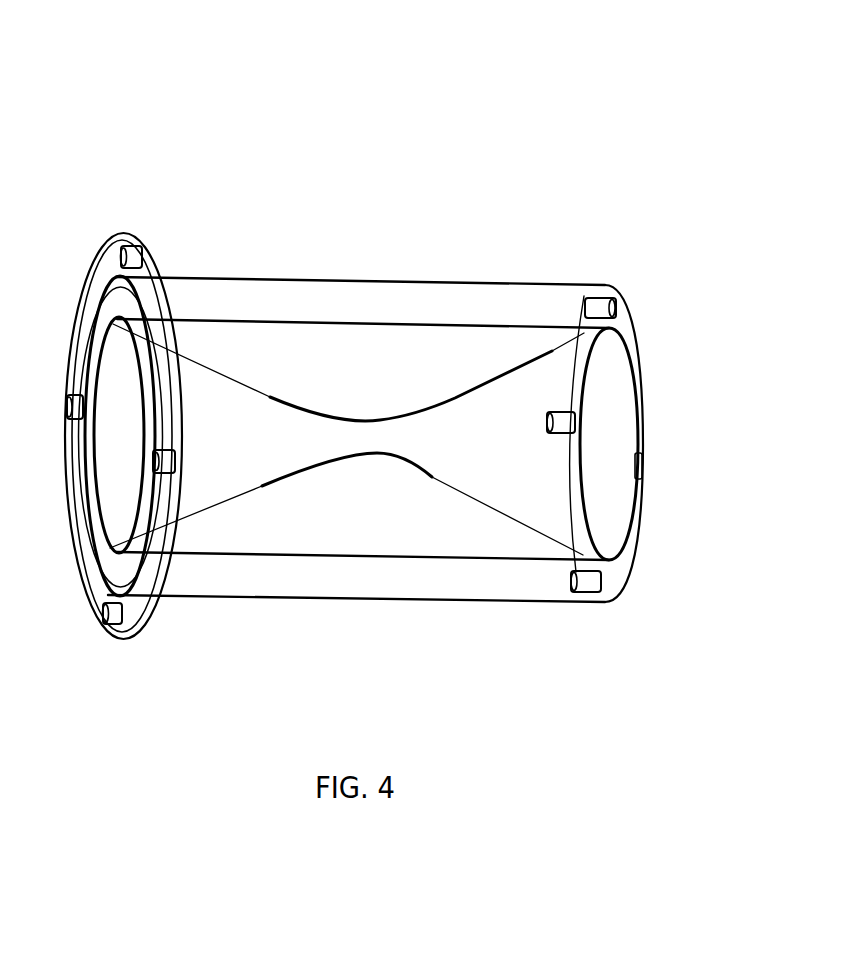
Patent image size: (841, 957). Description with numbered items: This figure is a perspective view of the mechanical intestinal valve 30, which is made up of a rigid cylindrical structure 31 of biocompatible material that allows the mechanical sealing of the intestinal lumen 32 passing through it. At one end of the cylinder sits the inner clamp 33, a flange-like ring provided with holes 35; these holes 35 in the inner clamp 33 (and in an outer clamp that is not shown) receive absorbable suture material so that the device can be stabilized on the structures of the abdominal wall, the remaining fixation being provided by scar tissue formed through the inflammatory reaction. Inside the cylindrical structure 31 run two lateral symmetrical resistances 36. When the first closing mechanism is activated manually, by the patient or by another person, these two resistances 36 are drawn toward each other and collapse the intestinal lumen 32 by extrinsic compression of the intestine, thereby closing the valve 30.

The mechanical intestinal valve 30 is at (628, 205).
The rigid cylindrical structure 31 is at (304, 294).
The intestinal lumen 32 is at (611, 437).
The inner clamp 33 is at (124, 226).
The holes 35 is at (354, 494).
The lateral symmetrical resistances 36 is at (421, 496).